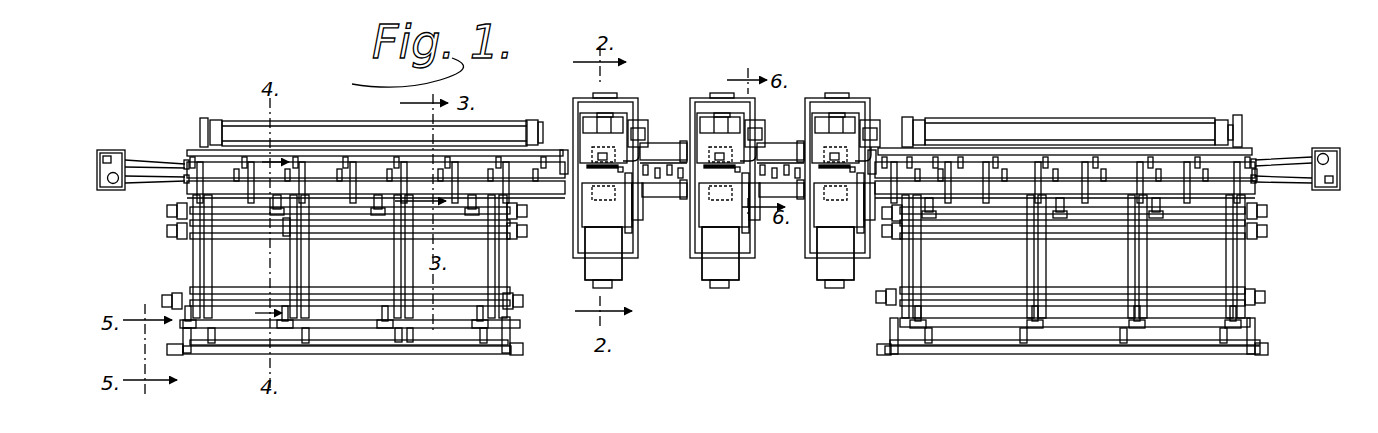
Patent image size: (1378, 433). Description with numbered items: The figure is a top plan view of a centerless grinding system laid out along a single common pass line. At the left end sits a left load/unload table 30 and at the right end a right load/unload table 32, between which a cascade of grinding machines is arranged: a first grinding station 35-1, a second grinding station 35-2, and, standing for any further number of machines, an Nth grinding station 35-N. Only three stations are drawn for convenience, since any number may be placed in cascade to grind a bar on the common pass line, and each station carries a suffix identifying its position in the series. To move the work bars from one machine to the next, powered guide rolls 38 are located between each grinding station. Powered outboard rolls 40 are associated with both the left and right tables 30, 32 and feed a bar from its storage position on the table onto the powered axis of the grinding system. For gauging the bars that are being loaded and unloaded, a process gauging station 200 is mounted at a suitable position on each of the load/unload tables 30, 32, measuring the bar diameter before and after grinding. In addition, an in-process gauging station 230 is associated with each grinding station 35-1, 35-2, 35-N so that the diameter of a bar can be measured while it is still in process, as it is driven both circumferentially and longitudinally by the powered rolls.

The left load/unload table 30 is at (396, 362).
The right load/unload table 32 is at (1093, 356).
The first grinding station 35-1 is at (639, 273).
The second grinding station 35-2 is at (724, 293).
The Nth grinding station 35-N is at (849, 92).
The powered guide rolls 38 is at (656, 160).
The powered outboard rolls 40 is at (532, 182).
The process gauging station 200 is at (382, 334).
The in-process gauging station 230 is at (628, 186).